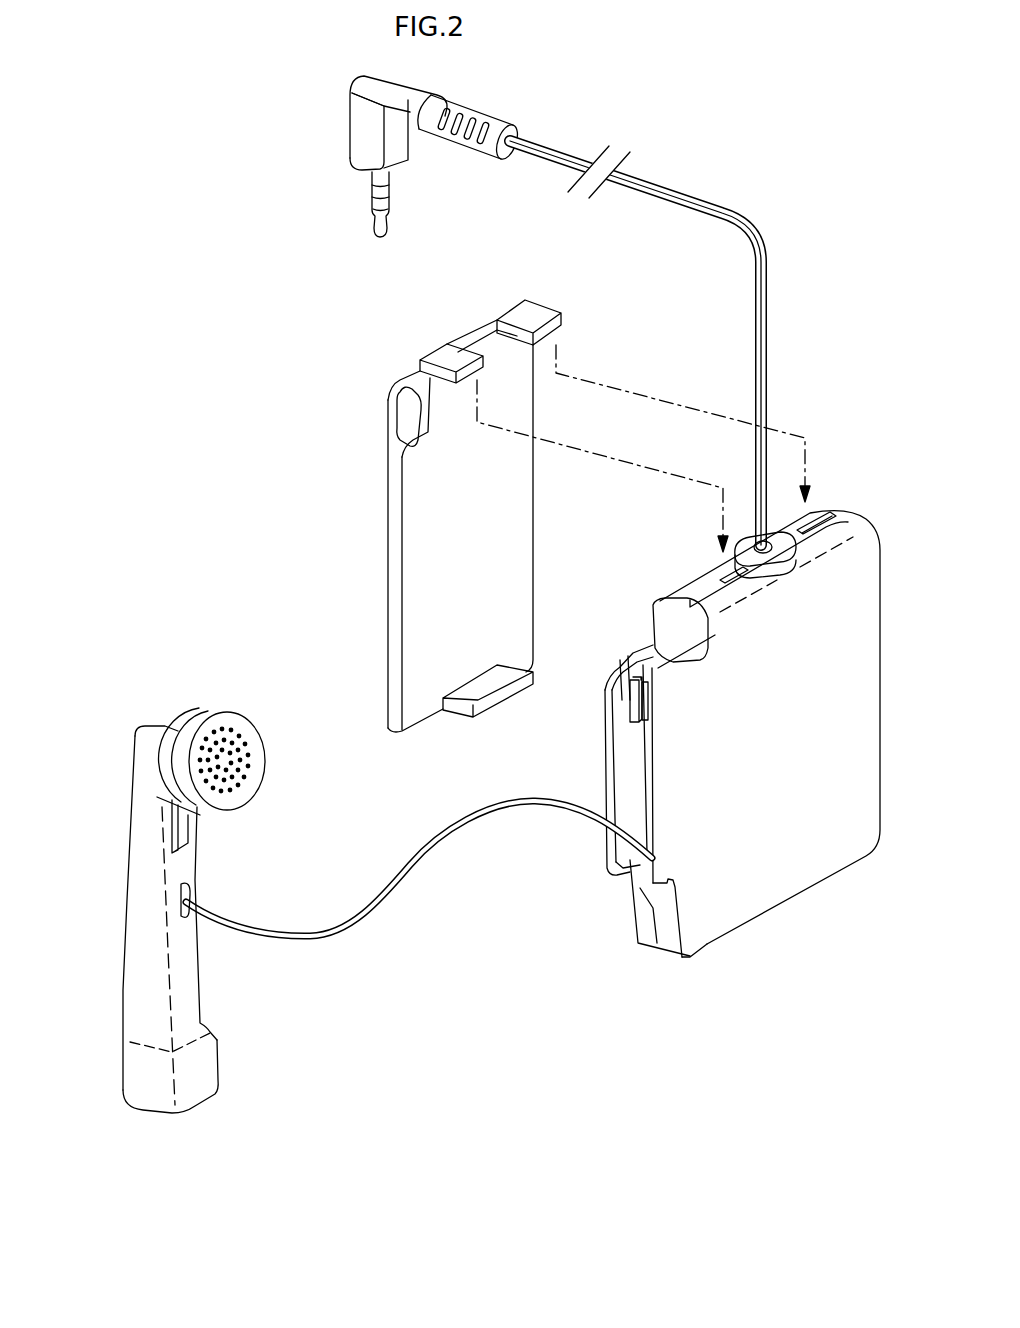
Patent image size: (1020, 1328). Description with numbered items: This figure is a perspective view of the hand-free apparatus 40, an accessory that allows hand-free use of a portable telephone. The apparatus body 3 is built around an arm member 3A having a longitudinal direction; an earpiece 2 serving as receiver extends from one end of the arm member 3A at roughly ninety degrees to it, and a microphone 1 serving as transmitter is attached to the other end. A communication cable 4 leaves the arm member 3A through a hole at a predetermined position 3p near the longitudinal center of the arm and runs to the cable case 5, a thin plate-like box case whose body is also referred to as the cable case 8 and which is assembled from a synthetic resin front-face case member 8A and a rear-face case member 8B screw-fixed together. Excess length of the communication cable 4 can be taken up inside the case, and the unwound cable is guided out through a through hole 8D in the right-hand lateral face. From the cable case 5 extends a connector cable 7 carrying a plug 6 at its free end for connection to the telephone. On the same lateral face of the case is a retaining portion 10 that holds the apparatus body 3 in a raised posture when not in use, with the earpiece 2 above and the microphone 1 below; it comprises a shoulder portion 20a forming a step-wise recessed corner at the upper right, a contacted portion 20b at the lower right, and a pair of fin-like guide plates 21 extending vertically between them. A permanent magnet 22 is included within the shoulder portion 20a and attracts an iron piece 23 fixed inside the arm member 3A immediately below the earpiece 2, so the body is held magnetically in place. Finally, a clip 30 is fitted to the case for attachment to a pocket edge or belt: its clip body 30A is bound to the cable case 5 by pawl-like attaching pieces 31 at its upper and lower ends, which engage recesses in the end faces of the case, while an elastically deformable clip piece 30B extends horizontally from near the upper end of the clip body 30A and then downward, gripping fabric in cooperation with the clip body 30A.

The microphone 1 is at (203, 1057).
The earpiece 2 is at (263, 760).
The apparatus body 3 is at (133, 726).
The arm member 3A is at (135, 930).
The predetermined position 3p is at (182, 893).
The communication cable 4 is at (357, 924).
The cable case 5 is at (851, 492).
The plug 6 is at (352, 136).
The connector cable 7 is at (772, 286).
The cable case 8 is at (735, 1025).
The front-face case member 8A is at (706, 942).
The rear-face case member 8B is at (641, 943).
The through hole 8D is at (640, 855).
The retaining portion 10 is at (606, 783).
The shoulder portion 20a is at (653, 638).
The contacted portion 20b is at (640, 893).
The fin-like guide plates 21 is at (640, 722).
The permanent magnet 22 is at (607, 678).
The iron piece 23 is at (183, 823).
The clip 30 is at (292, 428).
The clip body 30A is at (390, 560).
The clip piece 30B is at (390, 408).
The attaching pieces 31 is at (527, 317).
The hand-free apparatus 40 is at (411, 1122).